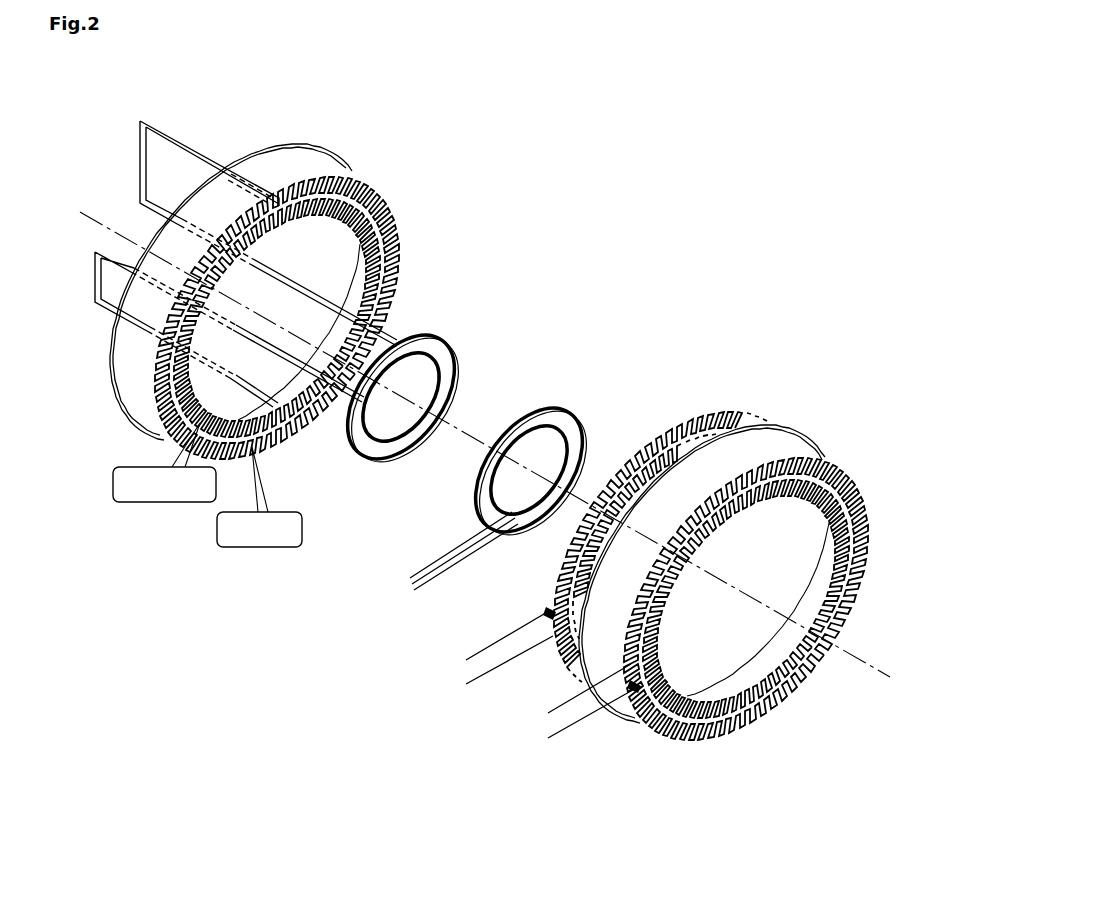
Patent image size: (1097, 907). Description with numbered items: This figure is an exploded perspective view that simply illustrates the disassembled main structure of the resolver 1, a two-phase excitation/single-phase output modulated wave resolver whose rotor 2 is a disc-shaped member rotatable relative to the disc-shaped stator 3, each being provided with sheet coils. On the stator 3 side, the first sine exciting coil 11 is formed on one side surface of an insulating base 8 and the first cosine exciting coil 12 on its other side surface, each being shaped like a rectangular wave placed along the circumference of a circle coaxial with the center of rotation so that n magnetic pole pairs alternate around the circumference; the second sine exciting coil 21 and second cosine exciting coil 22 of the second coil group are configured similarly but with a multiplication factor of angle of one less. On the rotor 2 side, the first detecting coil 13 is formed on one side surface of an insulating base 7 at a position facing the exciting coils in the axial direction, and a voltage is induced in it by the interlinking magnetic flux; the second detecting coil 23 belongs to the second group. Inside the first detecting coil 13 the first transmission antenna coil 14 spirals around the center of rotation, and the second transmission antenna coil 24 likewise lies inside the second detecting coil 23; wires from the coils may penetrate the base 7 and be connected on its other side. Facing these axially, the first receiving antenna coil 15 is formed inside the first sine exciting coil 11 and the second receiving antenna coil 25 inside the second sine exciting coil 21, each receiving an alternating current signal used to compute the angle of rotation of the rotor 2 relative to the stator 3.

The resolver 1 is at (653, 180).
The rotor 2 is at (534, 222).
The stator 3 is at (610, 272).
The insulating base 7 is at (272, 147).
The insulating base 8 is at (793, 432).
The first sine exciting coil 11 is at (696, 425).
The second sine exciting coil 21 is at (663, 440).
The first cosine exciting coil 12 is at (853, 490).
The second cosine exciting coil 22 is at (864, 541).
The first detecting coil 13 is at (392, 214).
The second detecting coil 23 is at (393, 271).
The first transmission antenna coil 14 is at (440, 343).
The second transmission antenna coil 24 is at (372, 436).
The first receiving antenna coil 15 is at (565, 410).
The second receiving antenna coil 25 is at (499, 511).